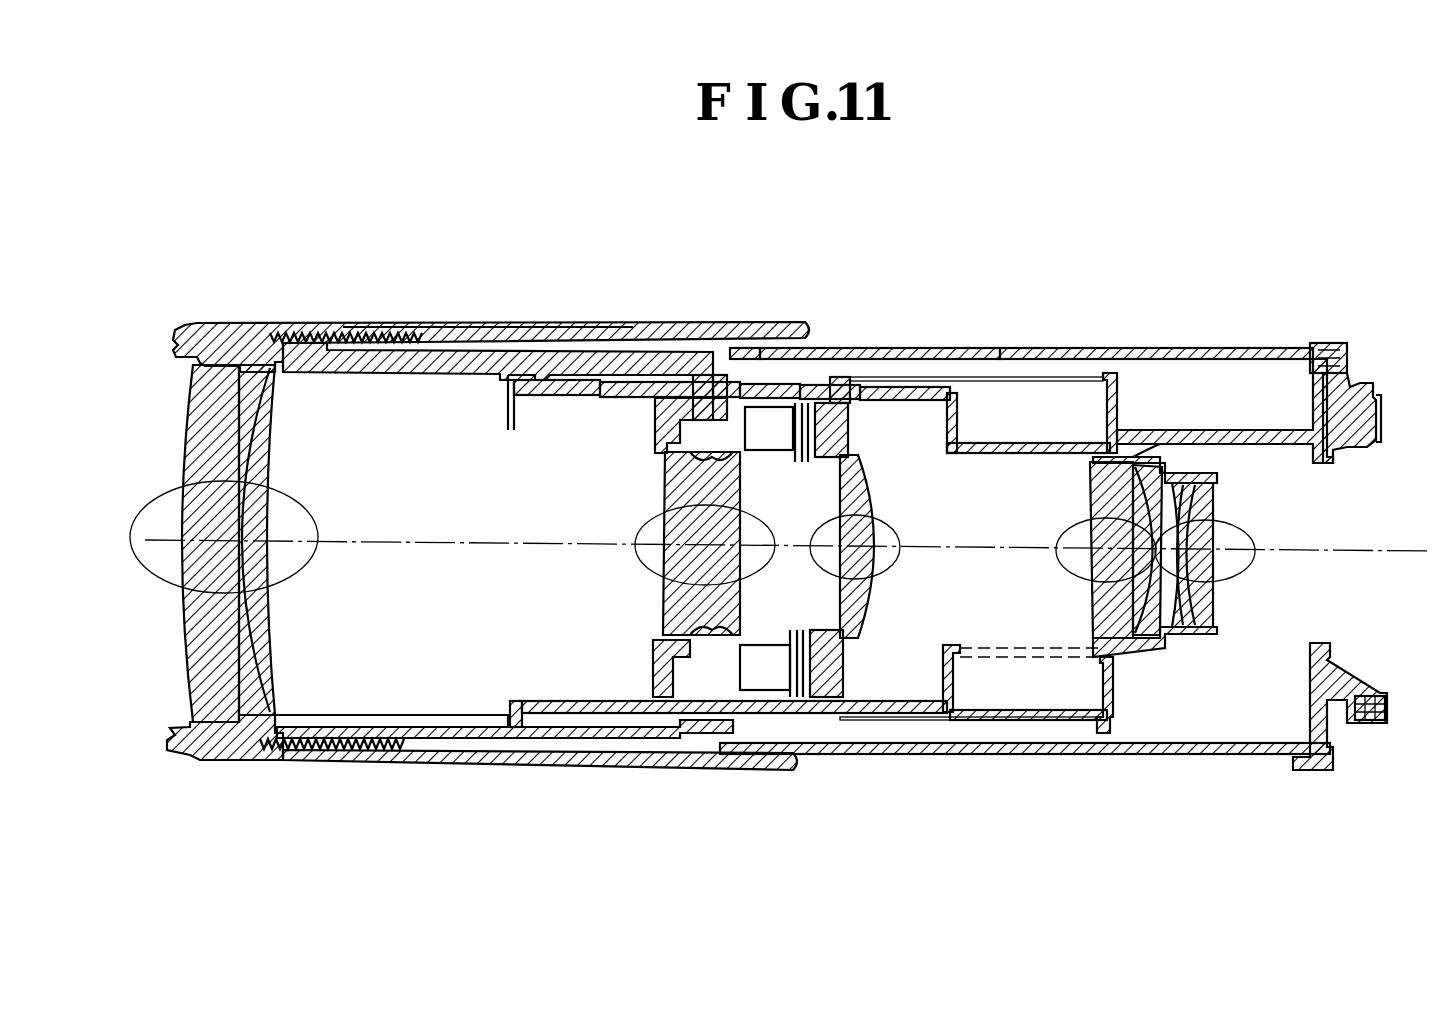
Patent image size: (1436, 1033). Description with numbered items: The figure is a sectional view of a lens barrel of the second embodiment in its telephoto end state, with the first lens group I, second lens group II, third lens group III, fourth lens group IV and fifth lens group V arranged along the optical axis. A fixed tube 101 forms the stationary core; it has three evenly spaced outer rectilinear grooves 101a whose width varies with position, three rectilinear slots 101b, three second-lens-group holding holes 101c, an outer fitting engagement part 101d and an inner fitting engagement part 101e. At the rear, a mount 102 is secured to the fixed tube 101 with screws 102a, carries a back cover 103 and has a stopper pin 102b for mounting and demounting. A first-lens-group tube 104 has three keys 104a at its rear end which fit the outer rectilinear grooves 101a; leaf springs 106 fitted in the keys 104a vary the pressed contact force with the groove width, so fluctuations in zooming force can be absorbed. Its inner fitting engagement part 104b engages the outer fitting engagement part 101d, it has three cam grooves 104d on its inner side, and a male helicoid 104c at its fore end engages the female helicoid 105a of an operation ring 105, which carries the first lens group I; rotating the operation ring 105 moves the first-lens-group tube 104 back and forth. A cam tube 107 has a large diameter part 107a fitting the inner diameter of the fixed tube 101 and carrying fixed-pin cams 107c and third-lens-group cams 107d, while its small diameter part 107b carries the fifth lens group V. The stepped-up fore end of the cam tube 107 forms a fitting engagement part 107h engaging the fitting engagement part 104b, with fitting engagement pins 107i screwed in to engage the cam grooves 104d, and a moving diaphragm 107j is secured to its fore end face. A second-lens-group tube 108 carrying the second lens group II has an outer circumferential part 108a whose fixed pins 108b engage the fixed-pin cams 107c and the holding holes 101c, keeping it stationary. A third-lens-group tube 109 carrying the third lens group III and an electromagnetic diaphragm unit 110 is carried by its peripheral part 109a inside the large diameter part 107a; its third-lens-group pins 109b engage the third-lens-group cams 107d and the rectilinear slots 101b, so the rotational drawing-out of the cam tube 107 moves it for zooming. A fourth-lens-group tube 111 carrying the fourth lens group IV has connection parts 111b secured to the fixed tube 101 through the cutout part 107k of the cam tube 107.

The fixed tube 101 is at (1120, 430).
The outer rectilinear groove 101a is at (1020, 754).
The rectilinear slot 101b is at (997, 378).
The second-lens-group holding hole 101c is at (715, 348).
The outer fitting engagement part 101d is at (1062, 400).
The inner fitting engagement part 101e is at (1060, 450).
The mount 102 is at (1375, 383).
The screw 102a is at (1357, 345).
The stopper pin 102b is at (1353, 723).
The back cover 103 is at (1380, 430).
The first-lens-group tube 104 is at (505, 323).
The key 104a is at (707, 770).
The leaf spring 106 is at (540, 798).
The fitting engagement part 104b is at (397, 373).
The male helicoid 104c is at (307, 373).
The cam groove 104d is at (357, 717).
The operation ring 105 is at (665, 348).
The female helicoid 105a is at (312, 323).
The cam tube 107 is at (965, 385).
The large diameter part 107a is at (907, 348).
The small diameter part 107b is at (1000, 453).
The fixed-pin cam 107c is at (757, 350).
The third-lens-group cam 107d is at (870, 400).
The fitting engagement part 107h is at (520, 396).
The fitting engagement pin 107i is at (515, 740).
The moving diaphragm 107j is at (507, 425).
The cutout part 107k is at (995, 650).
The second-lens-group tube 108 is at (653, 673).
The outer circumferential part 108a is at (660, 412).
The fixed pin 108b is at (700, 375).
The third-lens-group tube 109 is at (840, 677).
The peripheral part 109a is at (815, 714).
The third-lens-group pin 109b is at (842, 378).
The electromagnetic diaphragm unit 110 is at (768, 660).
The fourth-lens-group tube 111 is at (1150, 445).
The connection part 111b is at (1115, 690).
The first lens group I is at (310, 572).
The second lens group II is at (647, 563).
The third lens group III is at (885, 573).
The fourth lens group IV is at (1053, 560).
The fifth lens group V is at (1247, 580).